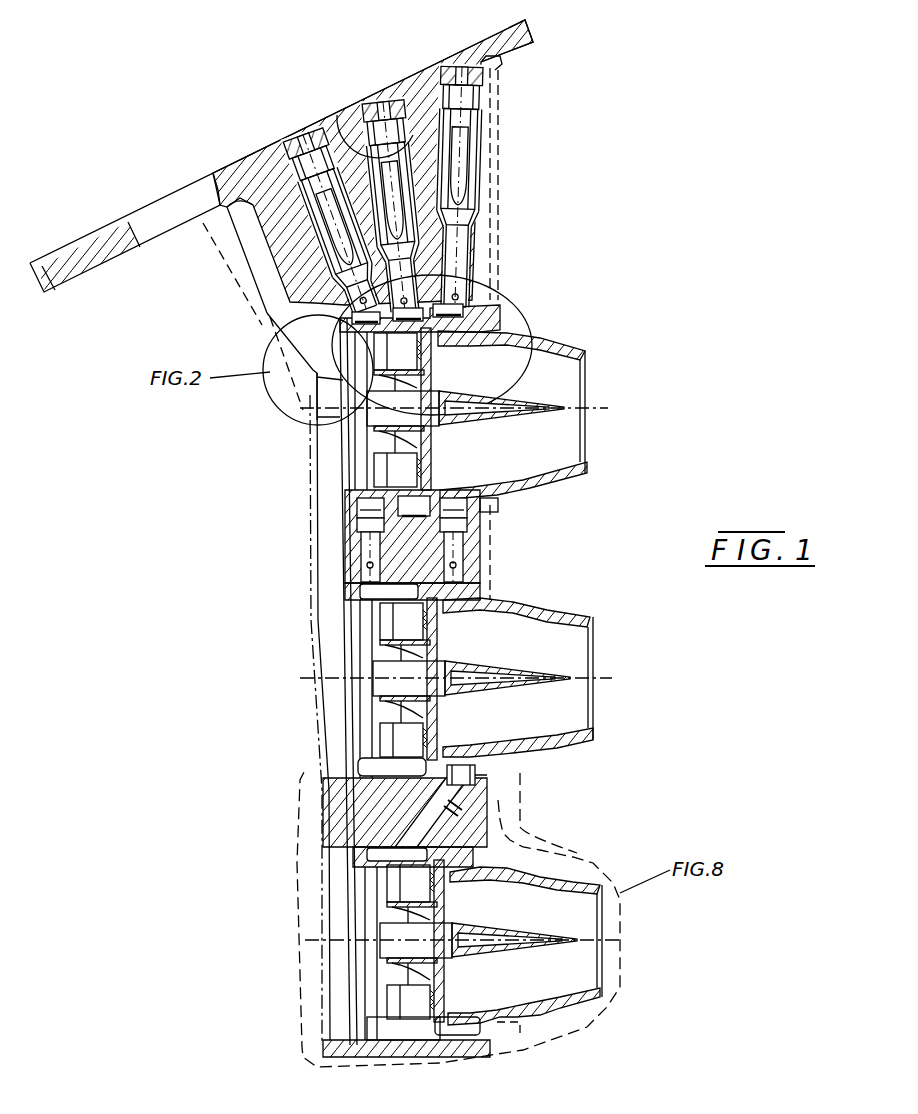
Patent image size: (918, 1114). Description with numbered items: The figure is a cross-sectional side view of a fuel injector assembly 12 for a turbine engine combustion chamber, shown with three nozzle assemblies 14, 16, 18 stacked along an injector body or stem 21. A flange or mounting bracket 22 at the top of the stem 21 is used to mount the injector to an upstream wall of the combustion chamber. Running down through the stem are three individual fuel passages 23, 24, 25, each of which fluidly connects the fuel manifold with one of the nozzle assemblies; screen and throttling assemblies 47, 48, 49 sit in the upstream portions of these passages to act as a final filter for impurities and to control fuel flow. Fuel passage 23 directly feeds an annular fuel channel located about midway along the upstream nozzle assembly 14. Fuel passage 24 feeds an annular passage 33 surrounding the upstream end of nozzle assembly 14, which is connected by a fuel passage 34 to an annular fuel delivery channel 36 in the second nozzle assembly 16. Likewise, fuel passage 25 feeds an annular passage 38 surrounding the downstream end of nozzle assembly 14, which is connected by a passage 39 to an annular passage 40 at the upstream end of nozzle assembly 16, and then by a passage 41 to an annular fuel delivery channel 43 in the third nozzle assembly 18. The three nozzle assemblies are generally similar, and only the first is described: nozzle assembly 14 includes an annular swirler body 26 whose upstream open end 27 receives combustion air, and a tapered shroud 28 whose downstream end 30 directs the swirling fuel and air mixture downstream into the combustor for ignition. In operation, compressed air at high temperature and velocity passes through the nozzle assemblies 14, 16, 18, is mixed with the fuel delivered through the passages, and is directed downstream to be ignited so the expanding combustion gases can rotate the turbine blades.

The fuel injector assembly 12 is at (340, 216).
The nozzle assembly 14 is at (479, 381).
The nozzle assembly 16 is at (556, 578).
The nozzle assembly 18 is at (583, 826).
The injector body or stem 21 is at (473, 227).
The flange or mounting bracket 22 is at (93, 243).
The fuel passage 23 is at (337, 115).
The fuel passage 24 is at (277, 232).
The fuel passage 25 is at (503, 186).
The swirler body 26 is at (370, 487).
The upstream open end 27 is at (360, 463).
The tapered shroud 28 is at (553, 340).
The downstream end 30 is at (590, 437).
The annular passage 33 is at (365, 524).
The fuel passage 34 is at (365, 551).
The annular fuel delivery channel 36 is at (385, 590).
The annular passage 38 is at (482, 520).
The passage 39 is at (470, 558).
The annular passage 40 is at (470, 775).
The passage 41 is at (420, 822).
The annular fuel delivery channel 43 is at (350, 857).
The screen and throttling assembly 47 is at (418, 150).
The screen and throttling assembly 48 is at (293, 193).
The screen and throttling assembly 49 is at (481, 92).